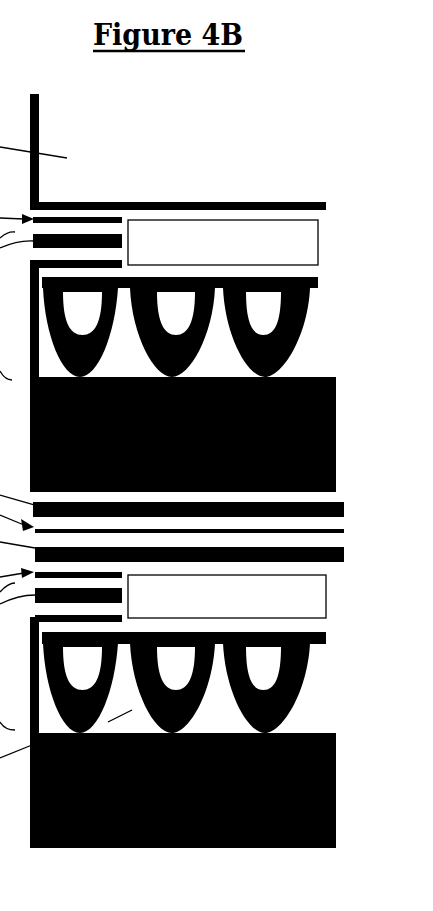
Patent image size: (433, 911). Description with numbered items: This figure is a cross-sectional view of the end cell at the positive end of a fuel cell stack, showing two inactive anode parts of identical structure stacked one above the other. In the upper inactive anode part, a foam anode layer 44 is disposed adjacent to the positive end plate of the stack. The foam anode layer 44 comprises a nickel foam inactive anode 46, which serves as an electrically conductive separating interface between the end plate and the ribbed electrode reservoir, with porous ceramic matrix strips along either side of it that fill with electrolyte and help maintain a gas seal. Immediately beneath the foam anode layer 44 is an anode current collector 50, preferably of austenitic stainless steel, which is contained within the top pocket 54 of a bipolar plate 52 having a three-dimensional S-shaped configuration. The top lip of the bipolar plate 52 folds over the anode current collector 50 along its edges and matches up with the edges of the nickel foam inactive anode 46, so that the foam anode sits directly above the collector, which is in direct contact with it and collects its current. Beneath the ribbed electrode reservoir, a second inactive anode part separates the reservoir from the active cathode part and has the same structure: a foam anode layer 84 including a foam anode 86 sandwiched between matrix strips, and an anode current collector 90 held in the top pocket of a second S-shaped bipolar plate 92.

The foam anode layer 44 is at (328, 220).
The nickel foam inactive anode 46 is at (259, 243).
The anode current collector 50 is at (294, 353).
The bipolar plate 52 is at (32, 435).
The top pocket 54 is at (259, 305).
The foam anode layer 84 is at (336, 570).
The foam anode 86 is at (283, 592).
The anode current collector 90 is at (303, 705).
The second bipolar plate 92 is at (32, 822).